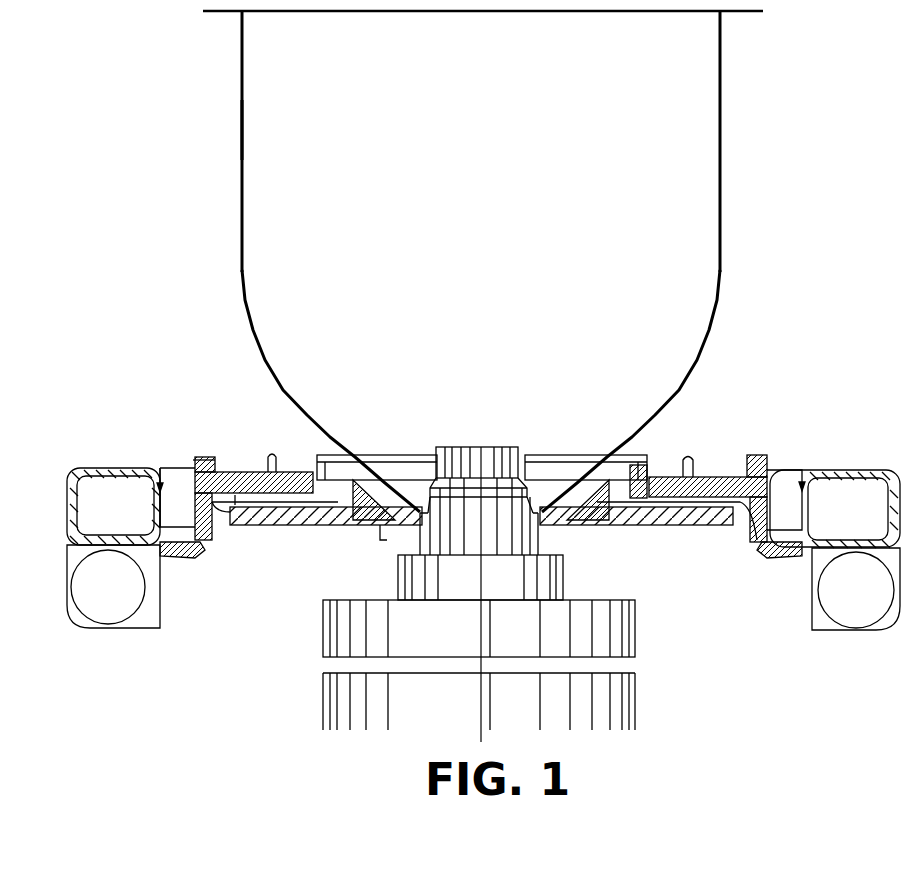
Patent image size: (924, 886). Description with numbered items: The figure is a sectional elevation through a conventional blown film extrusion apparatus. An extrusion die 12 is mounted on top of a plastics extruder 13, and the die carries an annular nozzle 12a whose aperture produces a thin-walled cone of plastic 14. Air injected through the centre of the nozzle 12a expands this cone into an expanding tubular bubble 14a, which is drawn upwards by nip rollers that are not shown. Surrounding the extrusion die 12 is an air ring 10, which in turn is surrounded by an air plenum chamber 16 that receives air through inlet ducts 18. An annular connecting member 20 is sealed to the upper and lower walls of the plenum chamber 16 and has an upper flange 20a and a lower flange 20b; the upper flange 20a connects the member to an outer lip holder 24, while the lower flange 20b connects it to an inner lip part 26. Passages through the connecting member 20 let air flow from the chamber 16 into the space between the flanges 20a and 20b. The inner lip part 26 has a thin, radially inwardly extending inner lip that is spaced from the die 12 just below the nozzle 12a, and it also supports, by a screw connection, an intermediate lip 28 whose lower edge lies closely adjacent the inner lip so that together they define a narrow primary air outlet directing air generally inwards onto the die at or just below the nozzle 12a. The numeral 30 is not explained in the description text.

The air ring 10 is at (250, 540).
The extrusion die 12 is at (524, 450).
The annular nozzle 12a is at (414, 500).
The plastics extruder 13 is at (645, 628).
The thin-walled cone of plastic 14 is at (690, 372).
The expanding tubular bubble 14a is at (242, 135).
The air plenum chamber 16 is at (128, 521).
The inlet ducts 18 is at (128, 606).
The annular connecting member 20 is at (297, 480).
The upper flange 20a is at (223, 458).
The lower flange 20b is at (227, 545).
The outer lip holder 24 is at (247, 465).
The inner lip part 26 is at (290, 527).
The intermediate lip 28 is at (383, 527).
The wedge support 30 is at (323, 480).